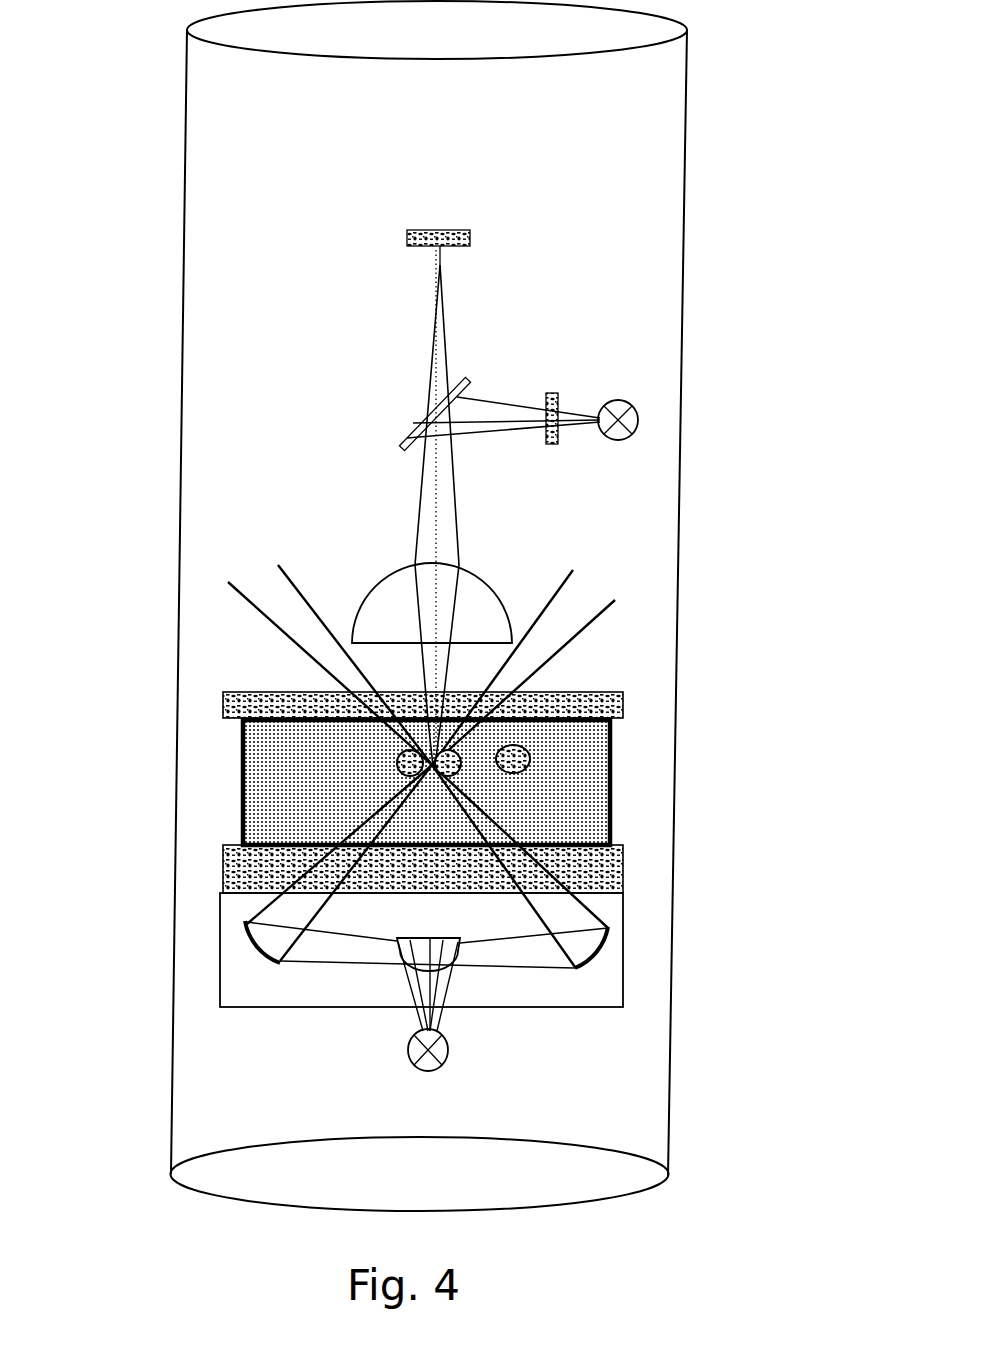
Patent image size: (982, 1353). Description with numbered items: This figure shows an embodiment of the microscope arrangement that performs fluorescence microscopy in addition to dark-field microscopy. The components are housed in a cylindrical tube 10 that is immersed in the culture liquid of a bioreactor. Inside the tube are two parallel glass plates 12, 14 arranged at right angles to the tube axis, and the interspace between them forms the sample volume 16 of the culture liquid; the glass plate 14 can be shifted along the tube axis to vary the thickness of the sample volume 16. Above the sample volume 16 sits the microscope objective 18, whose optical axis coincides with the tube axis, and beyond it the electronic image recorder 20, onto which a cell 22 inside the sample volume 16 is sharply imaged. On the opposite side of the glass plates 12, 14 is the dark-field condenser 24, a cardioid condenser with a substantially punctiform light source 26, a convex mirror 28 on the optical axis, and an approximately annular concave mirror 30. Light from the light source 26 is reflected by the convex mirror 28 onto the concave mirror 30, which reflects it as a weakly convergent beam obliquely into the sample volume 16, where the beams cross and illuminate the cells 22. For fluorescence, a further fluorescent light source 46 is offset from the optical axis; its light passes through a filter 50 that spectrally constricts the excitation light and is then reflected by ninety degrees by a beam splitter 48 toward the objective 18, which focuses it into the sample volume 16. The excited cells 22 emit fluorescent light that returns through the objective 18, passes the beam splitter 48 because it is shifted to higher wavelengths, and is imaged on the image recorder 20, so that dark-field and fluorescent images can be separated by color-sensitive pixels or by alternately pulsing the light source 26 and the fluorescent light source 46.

The cylindrical tube 10 is at (683, 171).
The glass plate 12 is at (623, 709).
The glass plate 14 is at (590, 876).
The sample volume 16 is at (572, 746).
The microscope objective 18 is at (577, 603).
The image recorder 20 is at (470, 238).
The cell 22 is at (455, 772).
The dark-field condenser 24 is at (220, 941).
The light source 26 is at (448, 1053).
The convex mirror 28 is at (460, 960).
The concave mirror 30 is at (607, 948).
The fluorescent light source 46 is at (638, 413).
The beam splitter 48 is at (413, 425).
The filter 50 is at (552, 393).